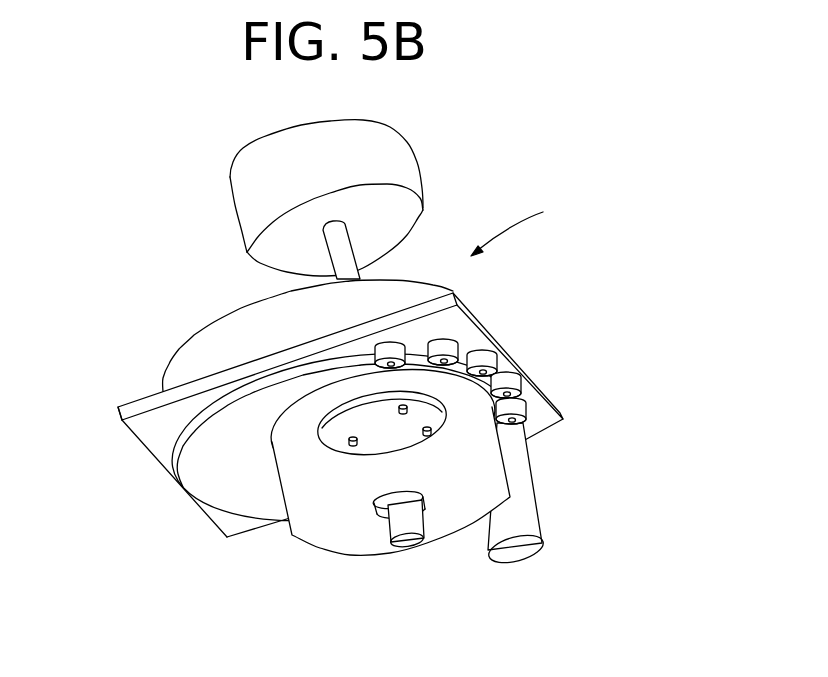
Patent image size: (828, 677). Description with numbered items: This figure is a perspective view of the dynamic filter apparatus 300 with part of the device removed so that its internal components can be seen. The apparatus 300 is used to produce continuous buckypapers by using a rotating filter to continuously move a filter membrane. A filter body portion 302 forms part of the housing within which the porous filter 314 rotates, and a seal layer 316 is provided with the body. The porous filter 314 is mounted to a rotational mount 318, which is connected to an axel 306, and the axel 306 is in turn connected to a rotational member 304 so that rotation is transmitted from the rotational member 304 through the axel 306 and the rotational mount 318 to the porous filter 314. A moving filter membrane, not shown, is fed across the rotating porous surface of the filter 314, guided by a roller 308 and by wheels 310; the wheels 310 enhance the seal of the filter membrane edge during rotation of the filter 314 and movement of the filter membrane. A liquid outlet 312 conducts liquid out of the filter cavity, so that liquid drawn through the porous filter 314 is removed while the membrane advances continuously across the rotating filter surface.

The dynamic filter apparatus 300 is at (530, 225).
The filter body portion 302 is at (172, 365).
The rotational member 304 is at (400, 158).
The axel 306 is at (337, 242).
The roller 308 is at (523, 507).
The wheels 310 is at (407, 347).
The liquid outlet 312 is at (397, 527).
The porous filter 314 is at (290, 487).
The seal layer 316 is at (192, 466).
The rotational mount 318 is at (423, 417).